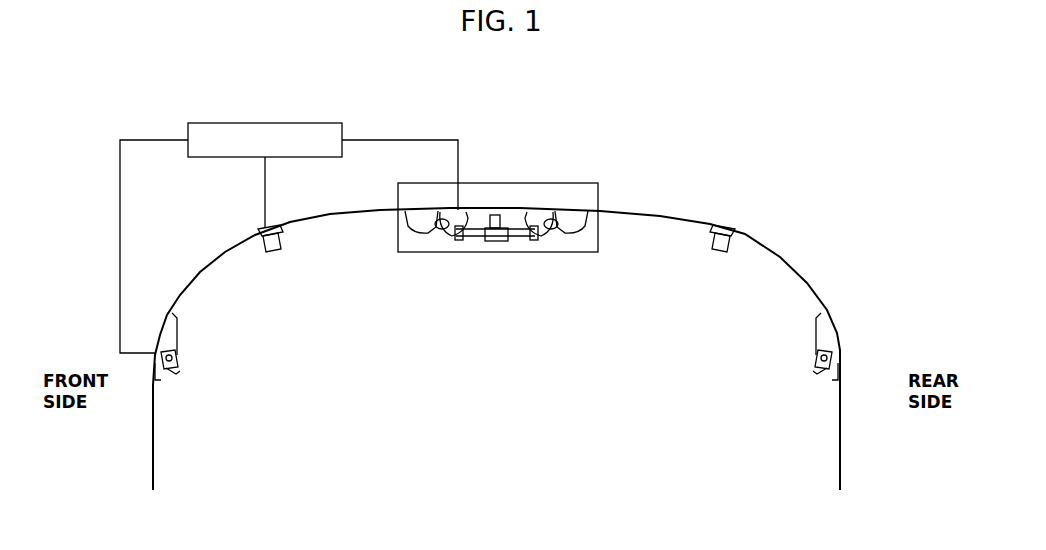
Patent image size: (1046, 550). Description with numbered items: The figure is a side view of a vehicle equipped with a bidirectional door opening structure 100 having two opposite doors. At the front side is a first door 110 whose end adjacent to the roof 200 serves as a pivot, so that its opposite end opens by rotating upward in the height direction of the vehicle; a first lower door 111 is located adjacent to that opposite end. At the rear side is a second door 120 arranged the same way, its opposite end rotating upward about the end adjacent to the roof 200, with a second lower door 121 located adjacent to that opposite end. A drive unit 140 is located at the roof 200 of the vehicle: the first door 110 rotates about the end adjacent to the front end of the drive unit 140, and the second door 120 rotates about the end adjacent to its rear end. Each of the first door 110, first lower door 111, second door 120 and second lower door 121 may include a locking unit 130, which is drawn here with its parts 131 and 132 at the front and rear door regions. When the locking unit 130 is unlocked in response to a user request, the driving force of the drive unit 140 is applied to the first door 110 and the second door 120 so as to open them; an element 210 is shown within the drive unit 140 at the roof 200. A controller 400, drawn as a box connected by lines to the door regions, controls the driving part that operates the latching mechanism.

The bidirectional door opening structure 100 is at (511, 135).
The first door 110 is at (207, 268).
The first lower door 111 is at (153, 437).
The second door 120 is at (780, 260).
The second lower door 121 is at (842, 441).
The locking unit 130 is at (293, 404).
The first sensor 131 is at (279, 252).
The second sensor 132 is at (178, 366).
The drive unit 140 is at (577, 252).
The roof 200 is at (432, 210).
The drive mechanism 210 is at (477, 210).
The controller 400 is at (272, 123).